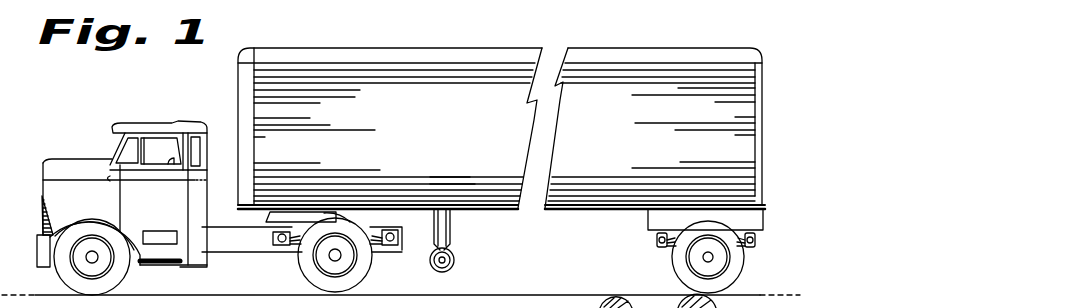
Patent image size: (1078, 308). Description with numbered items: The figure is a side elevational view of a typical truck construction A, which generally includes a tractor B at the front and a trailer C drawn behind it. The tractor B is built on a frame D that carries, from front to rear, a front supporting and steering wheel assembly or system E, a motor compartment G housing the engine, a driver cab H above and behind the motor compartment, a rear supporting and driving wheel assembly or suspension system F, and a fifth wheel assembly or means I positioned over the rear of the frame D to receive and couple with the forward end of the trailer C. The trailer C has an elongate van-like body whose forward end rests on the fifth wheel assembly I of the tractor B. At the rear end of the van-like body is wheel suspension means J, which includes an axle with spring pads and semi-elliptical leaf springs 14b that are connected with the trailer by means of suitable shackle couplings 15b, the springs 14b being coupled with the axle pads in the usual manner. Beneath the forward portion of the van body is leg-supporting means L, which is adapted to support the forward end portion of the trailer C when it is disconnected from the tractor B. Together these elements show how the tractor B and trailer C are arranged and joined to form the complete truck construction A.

The truck construction A is at (190, 97).
The tractor B is at (86, 141).
The trailer C is at (569, 212).
The frame D is at (244, 250).
The front supporting and steering wheel assembly E is at (60, 278).
The rear supporting and driving wheel assembly F is at (302, 277).
The motor compartment G is at (42, 177).
The driver cab H is at (160, 123).
The fifth wheel assembly I is at (264, 220).
The wheel suspension means J is at (670, 271).
The leg-supporting means L is at (430, 268).
The semi-elliptical leaf springs 14b is at (672, 251).
The shackle couplings 15b is at (657, 240).